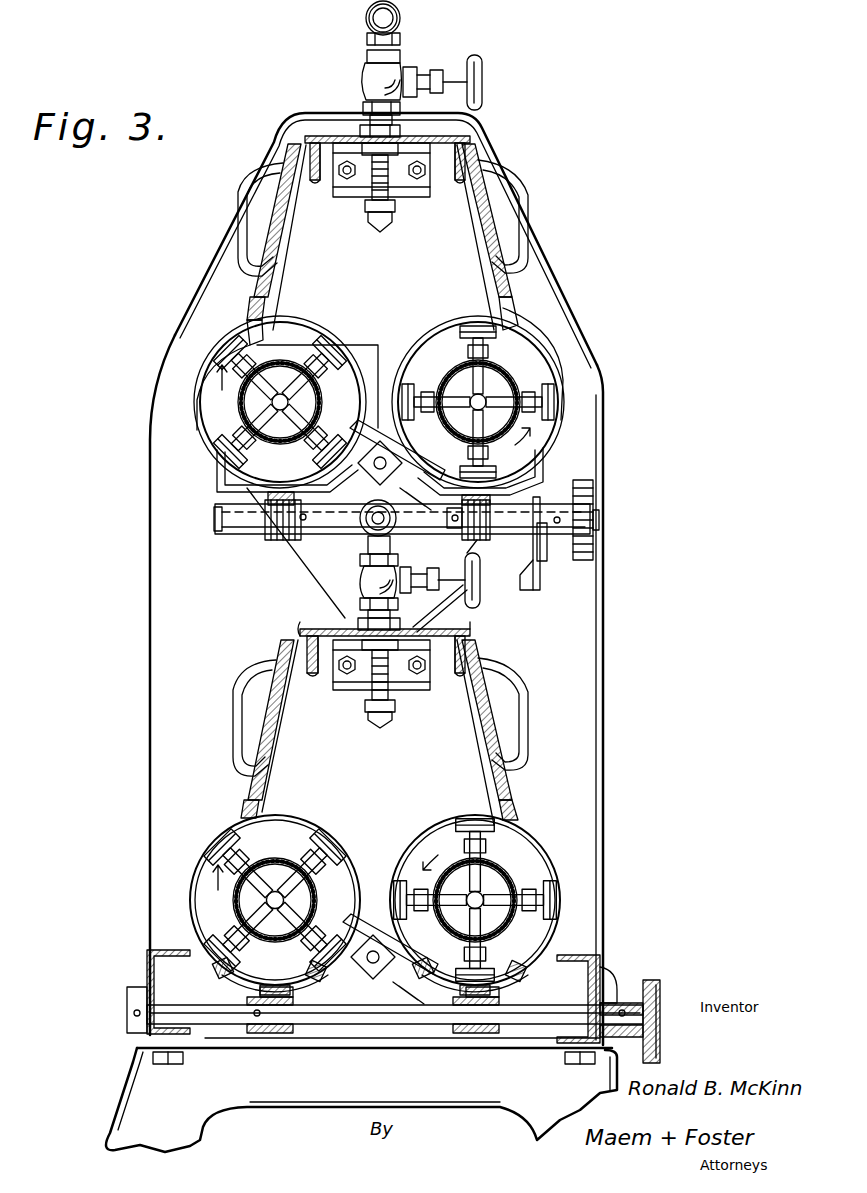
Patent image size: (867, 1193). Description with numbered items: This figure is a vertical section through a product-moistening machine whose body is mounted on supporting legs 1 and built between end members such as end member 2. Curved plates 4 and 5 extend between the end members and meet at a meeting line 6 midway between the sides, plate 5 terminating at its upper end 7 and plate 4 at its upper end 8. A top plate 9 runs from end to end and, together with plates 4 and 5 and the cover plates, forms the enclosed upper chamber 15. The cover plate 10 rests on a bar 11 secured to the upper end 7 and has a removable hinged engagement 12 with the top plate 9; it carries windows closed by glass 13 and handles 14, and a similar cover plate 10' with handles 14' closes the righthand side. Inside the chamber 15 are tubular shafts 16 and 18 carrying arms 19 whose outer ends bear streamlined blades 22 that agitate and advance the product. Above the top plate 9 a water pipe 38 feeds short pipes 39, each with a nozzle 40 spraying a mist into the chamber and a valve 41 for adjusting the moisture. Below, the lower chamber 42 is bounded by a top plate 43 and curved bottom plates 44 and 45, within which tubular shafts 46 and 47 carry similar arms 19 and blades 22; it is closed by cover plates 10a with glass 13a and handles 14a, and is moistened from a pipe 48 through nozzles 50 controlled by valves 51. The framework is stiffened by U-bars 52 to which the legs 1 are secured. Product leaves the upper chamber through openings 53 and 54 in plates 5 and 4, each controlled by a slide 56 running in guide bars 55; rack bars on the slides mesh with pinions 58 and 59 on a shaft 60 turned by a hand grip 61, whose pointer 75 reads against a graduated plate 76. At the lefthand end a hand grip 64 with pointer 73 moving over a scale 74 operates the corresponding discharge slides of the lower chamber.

The supporting legs 1 is at (361, 1095).
The end member 2 is at (585, 740).
The plate 4 is at (562, 370).
The plate 5 is at (200, 404).
The meeting line 6 is at (380, 430).
The upper end of plate 5 7 is at (268, 322).
The upper end of plate 4 8 is at (500, 322).
The top plate 9 is at (478, 120).
The cover plate 10 is at (359, 108).
The cover plate 10' is at (458, 186).
The cover plates 10a is at (300, 640).
The bar 11 is at (250, 307).
The hinged engagement 12 is at (312, 140).
The glass 13 is at (285, 232).
The glass 13a is at (270, 735).
The handles 14 is at (240, 219).
The handles 14' is at (546, 216).
The handles 14a is at (245, 690).
The enclosed chamber 15 is at (381, 217).
The tubular shaft 16 is at (305, 395).
The tubular shaft 18 is at (490, 388).
The arm 19 is at (312, 418).
The blade 22 is at (332, 350).
The pipe 38 is at (402, 18).
The short pipes 39 is at (370, 115).
The nozzle 40 is at (378, 232).
The valve 41 is at (408, 68).
The lower chamber 42 is at (381, 717).
The top plate 43 is at (430, 608).
The curved bottom plate 44 is at (192, 882).
The curved bottom plate 45 is at (562, 882).
The tubular shaft 46 is at (330, 875).
The tubular shaft 47 is at (495, 858).
The pipe 48 is at (365, 530).
The nozzle 50 is at (375, 728).
The control valve 51 is at (360, 580).
The U-bars 52 is at (147, 963).
The opening 53 is at (282, 492).
The opening 54 is at (492, 488).
The guide bars 55 is at (235, 478).
The slide 56 is at (220, 520).
The pinion 58 is at (283, 540).
The pinion 59 is at (480, 540).
The shaft 60 is at (430, 523).
The hand grip 61 is at (600, 495).
The hand grip 64 is at (660, 995).
The pointer 73 is at (618, 980).
The scale 74 is at (600, 958).
The pointer 75 is at (548, 570).
The graduated plate 76 is at (537, 572).